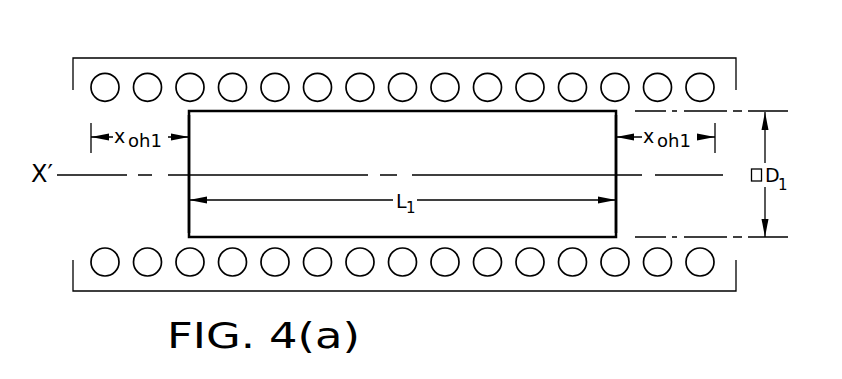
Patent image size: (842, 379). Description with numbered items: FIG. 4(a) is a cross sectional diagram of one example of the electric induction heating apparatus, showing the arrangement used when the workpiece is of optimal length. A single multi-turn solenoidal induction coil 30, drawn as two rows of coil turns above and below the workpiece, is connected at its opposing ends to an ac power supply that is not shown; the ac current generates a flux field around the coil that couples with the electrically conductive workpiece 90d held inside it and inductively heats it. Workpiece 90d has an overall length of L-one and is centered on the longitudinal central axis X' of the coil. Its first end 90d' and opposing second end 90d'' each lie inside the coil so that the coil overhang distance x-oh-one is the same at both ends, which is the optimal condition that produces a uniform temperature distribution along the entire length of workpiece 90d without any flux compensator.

The solenoidal induction coil 30 is at (404, 58).
The workpiece 90d is at (402, 174).
The first end of workpiece 90d' is at (149, 174).
The second end of workpiece 90d'' is at (668, 174).